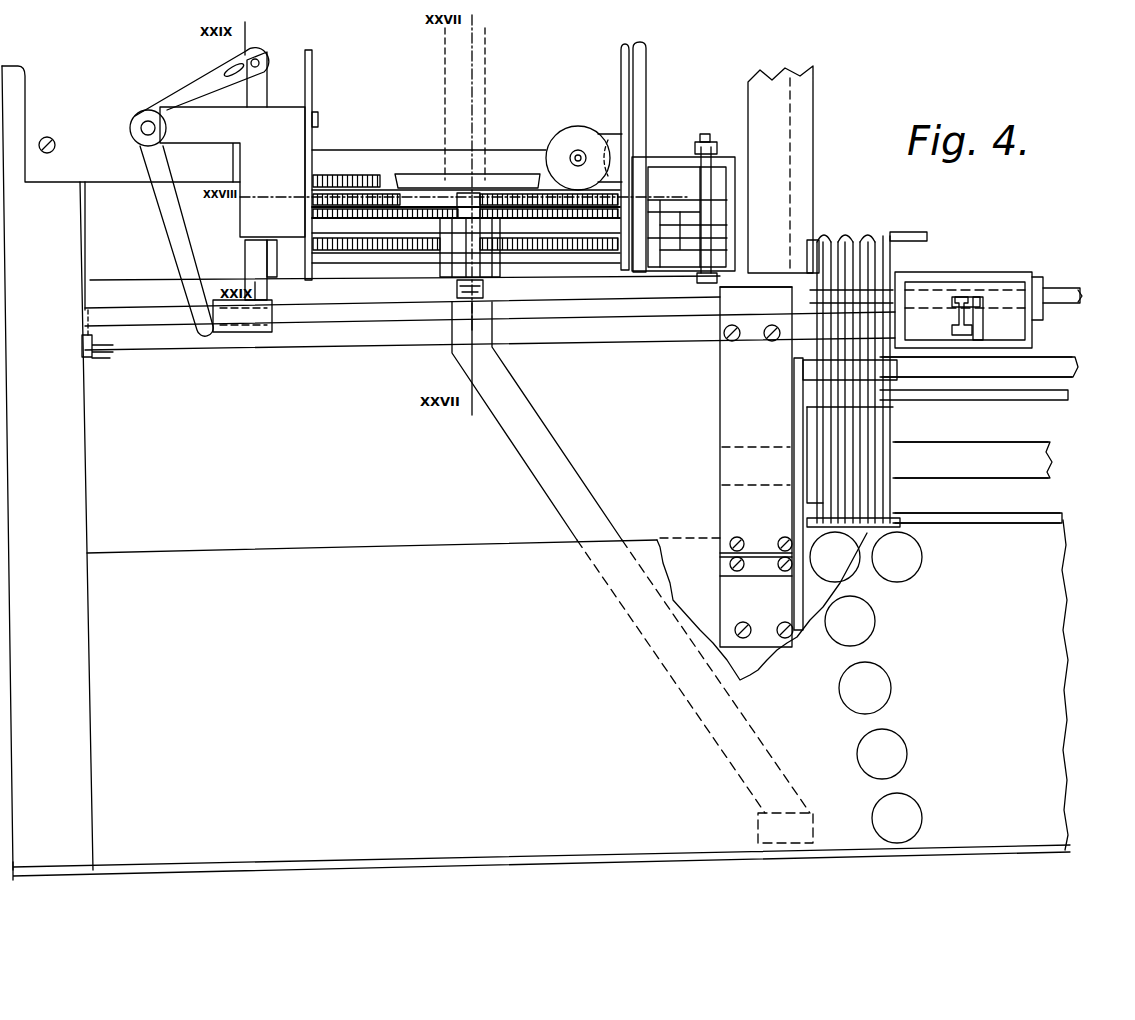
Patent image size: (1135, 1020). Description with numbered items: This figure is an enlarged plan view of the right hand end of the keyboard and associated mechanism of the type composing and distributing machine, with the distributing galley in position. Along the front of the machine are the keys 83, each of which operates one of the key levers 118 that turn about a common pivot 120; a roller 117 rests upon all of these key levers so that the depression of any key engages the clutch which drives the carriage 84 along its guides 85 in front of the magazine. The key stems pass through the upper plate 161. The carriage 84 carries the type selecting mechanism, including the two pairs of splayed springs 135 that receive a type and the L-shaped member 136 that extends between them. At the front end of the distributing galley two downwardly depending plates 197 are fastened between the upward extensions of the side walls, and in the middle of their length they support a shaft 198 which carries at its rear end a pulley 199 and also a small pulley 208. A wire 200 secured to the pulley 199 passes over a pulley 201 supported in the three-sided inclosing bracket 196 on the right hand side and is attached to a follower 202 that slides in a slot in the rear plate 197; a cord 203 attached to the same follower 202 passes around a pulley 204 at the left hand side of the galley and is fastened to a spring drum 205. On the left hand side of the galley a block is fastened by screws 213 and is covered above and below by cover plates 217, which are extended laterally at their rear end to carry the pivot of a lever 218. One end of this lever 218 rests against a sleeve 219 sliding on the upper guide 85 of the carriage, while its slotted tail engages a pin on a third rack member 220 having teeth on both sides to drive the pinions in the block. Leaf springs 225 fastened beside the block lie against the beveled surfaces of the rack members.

The third rack member 220 is at (255, 90).
The screws 213 is at (318, 113).
The cover plates 217 is at (232, 172).
The lever 218 is at (160, 200).
The leaf springs 225 is at (255, 272).
The sleeve 219 is at (245, 335).
The pulley 204 is at (338, 203).
The cord 203 is at (367, 193).
The pulley 199 is at (467, 171).
The spring drum 205 is at (575, 127).
The three-sided inclosing bracket 196 is at (668, 162).
The follower 202 is at (704, 137).
The pulley 201 is at (670, 207).
The wire 200 is at (673, 203).
The springs 135 is at (958, 290).
The L-shaped member 136 is at (980, 300).
The guides 85 is at (1066, 283).
The carriage 84 is at (1025, 325).
The roller 117 is at (1072, 364).
The key levers 118 is at (893, 512).
The common pivot 120 is at (971, 474).
The keys 83 is at (866, 687).
The upper plate 161 is at (148, 553).
The downwardly depending plates 197 is at (466, 247).
The shaft 198 is at (467, 247).
The small pulley 208 is at (490, 289).